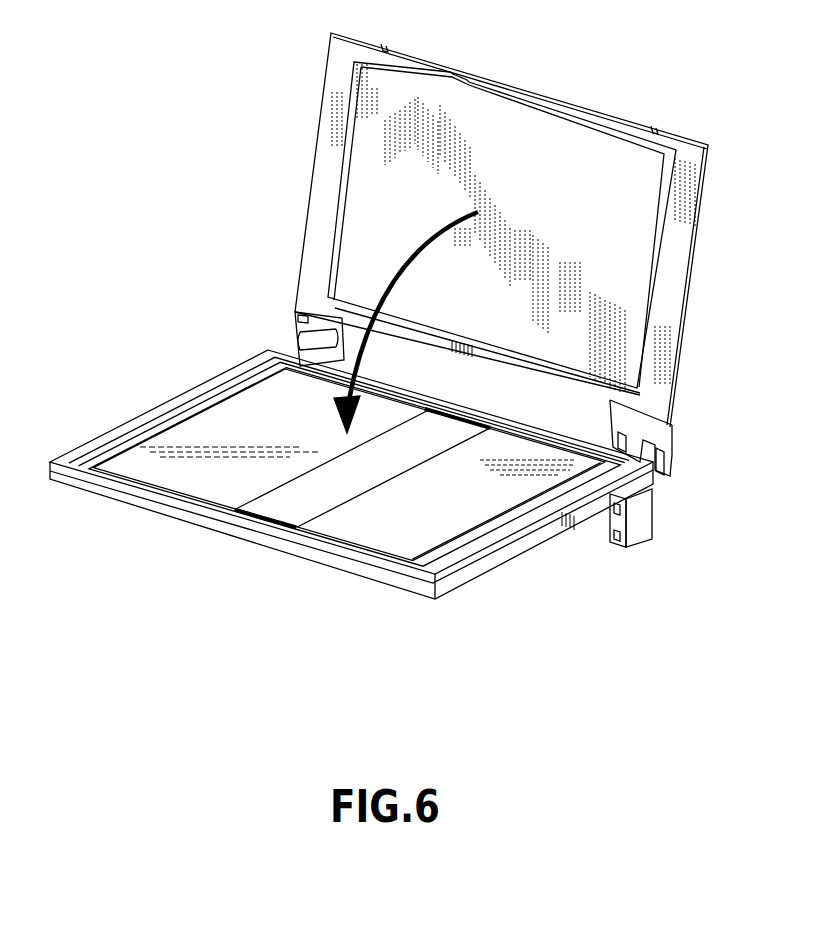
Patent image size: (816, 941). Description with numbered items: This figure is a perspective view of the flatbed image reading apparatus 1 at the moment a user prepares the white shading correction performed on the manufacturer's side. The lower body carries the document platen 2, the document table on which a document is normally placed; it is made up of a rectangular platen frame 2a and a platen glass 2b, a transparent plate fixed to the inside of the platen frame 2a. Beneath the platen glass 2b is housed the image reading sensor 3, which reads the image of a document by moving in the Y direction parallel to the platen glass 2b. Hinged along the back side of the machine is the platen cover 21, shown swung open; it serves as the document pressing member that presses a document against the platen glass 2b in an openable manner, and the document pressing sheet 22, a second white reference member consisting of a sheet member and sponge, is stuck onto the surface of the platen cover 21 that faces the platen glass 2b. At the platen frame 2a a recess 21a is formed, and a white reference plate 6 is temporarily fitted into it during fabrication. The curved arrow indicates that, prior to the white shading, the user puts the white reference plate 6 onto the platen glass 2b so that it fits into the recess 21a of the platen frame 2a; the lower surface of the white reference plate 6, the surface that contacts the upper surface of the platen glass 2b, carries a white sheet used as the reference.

The image reading apparatus 1 is at (583, 520).
The document platen 2 is at (606, 618).
The platen frame 2a is at (487, 533).
The platen glass 2b is at (397, 525).
The image reading sensor 3 is at (253, 395).
The white reference plate 6 is at (327, 488).
The platen cover 21 is at (318, 268).
The recess 21a is at (453, 418).
The document pressing sheet 22 is at (392, 181).